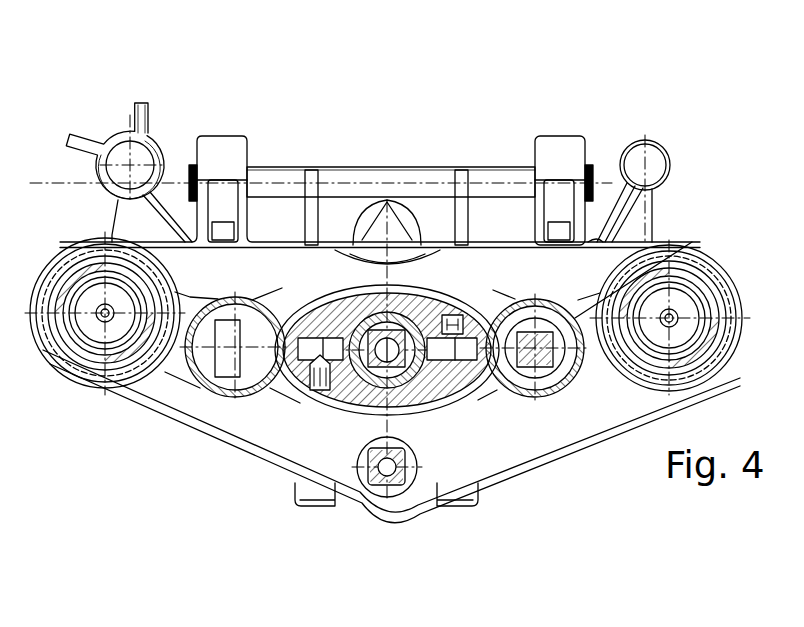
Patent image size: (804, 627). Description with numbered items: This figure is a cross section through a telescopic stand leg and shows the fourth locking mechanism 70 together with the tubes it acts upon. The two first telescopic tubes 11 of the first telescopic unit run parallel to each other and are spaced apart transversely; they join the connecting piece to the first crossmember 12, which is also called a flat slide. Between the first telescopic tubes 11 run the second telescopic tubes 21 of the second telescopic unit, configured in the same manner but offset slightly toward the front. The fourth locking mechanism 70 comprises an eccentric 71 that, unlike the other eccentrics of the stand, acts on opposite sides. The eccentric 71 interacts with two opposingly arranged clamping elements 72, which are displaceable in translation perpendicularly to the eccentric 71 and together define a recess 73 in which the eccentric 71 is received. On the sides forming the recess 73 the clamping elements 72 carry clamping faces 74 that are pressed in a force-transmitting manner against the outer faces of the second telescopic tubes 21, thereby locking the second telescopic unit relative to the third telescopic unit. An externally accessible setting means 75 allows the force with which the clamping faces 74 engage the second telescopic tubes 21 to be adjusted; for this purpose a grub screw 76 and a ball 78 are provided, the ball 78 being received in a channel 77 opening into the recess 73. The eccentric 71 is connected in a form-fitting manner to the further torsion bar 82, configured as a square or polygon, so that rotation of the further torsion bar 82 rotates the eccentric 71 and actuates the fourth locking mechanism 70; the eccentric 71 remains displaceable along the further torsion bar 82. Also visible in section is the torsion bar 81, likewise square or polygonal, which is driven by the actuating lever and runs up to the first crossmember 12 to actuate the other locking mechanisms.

The first telescopic tubes 11 is at (716, 318).
The first crossmember 12 is at (597, 388).
The second telescopic tubes 21 is at (662, 254).
The fourth locking mechanism 70 is at (487, 412).
The eccentric 71 is at (367, 328).
The clamping elements 72 is at (444, 312).
The recess 73 is at (412, 318).
The clamping faces 74 is at (300, 292).
The setting means 75 is at (345, 400).
The grub screw 76 is at (318, 398).
The channel 77 is at (225, 392).
The ball 78 is at (370, 412).
The torsion bar 81 is at (382, 487).
The further torsion bar 82 is at (413, 413).